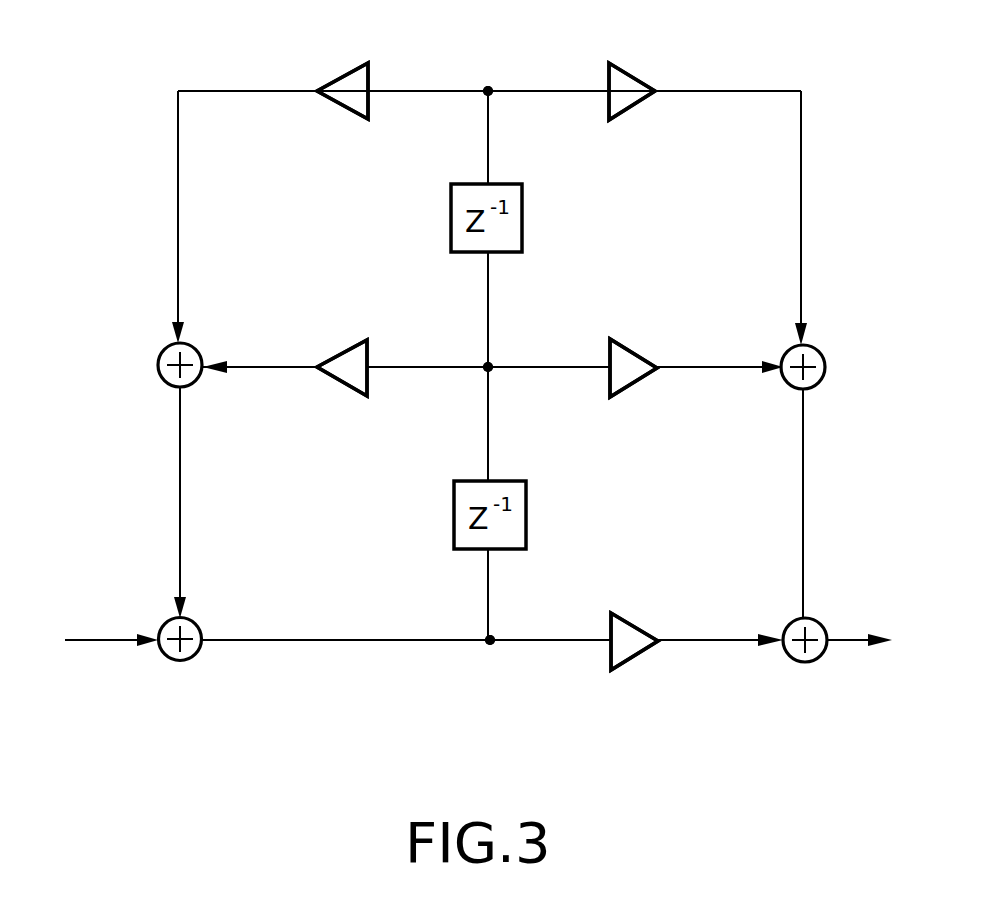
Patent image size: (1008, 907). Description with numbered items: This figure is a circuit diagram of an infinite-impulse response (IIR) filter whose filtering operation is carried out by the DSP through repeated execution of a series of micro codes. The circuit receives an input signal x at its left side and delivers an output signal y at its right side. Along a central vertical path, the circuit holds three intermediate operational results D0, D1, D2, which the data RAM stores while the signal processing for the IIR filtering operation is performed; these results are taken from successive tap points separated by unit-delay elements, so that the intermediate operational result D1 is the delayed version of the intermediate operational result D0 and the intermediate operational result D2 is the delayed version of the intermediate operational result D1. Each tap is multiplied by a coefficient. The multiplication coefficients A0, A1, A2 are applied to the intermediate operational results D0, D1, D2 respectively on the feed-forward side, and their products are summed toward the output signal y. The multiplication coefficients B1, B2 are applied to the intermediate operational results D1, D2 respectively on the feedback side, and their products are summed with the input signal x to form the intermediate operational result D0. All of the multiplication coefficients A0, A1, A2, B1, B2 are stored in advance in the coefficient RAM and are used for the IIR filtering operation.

The multiplication coefficient B2 is at (342, 72).
The multiplication coefficient A2 is at (632, 73).
The multiplication coefficient B1 is at (342, 350).
The multiplication coefficient A1 is at (633, 351).
The multiplication coefficient A0 is at (634, 626).
The intermediate operational result D2 is at (491, 74).
The intermediate operational result D1 is at (472, 350).
The intermediate operational result D0 is at (474, 623).
The input signal x is at (91, 639).
The output signal y is at (869, 639).